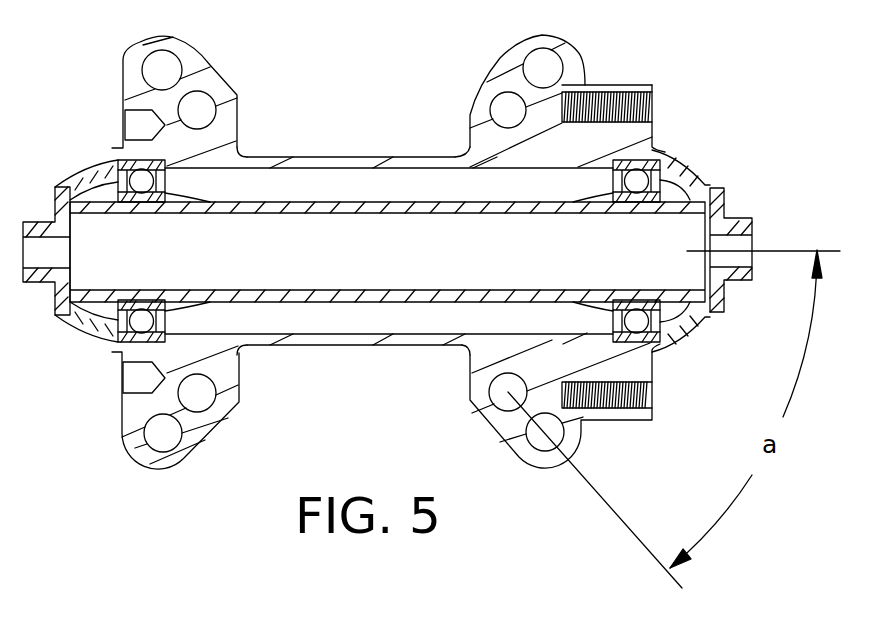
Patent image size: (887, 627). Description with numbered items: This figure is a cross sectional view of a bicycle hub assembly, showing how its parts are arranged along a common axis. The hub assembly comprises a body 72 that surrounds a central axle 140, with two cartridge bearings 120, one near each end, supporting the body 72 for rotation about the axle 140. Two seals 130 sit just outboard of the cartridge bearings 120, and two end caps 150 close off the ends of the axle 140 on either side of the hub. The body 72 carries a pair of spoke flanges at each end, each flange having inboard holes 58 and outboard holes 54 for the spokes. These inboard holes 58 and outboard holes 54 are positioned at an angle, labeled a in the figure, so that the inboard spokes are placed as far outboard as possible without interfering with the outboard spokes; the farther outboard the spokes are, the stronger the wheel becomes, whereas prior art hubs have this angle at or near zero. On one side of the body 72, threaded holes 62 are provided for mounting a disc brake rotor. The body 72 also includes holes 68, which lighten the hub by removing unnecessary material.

The outboard holes 54 is at (145, 442).
The inboard holes 58 is at (212, 407).
The threaded holes 62 is at (600, 100).
The holes 68 is at (137, 127).
The body 72 is at (240, 155).
The cartridge bearings 120 is at (117, 163).
The seals 130 is at (88, 330).
The axle 140 is at (312, 207).
The end caps 150 is at (43, 277).